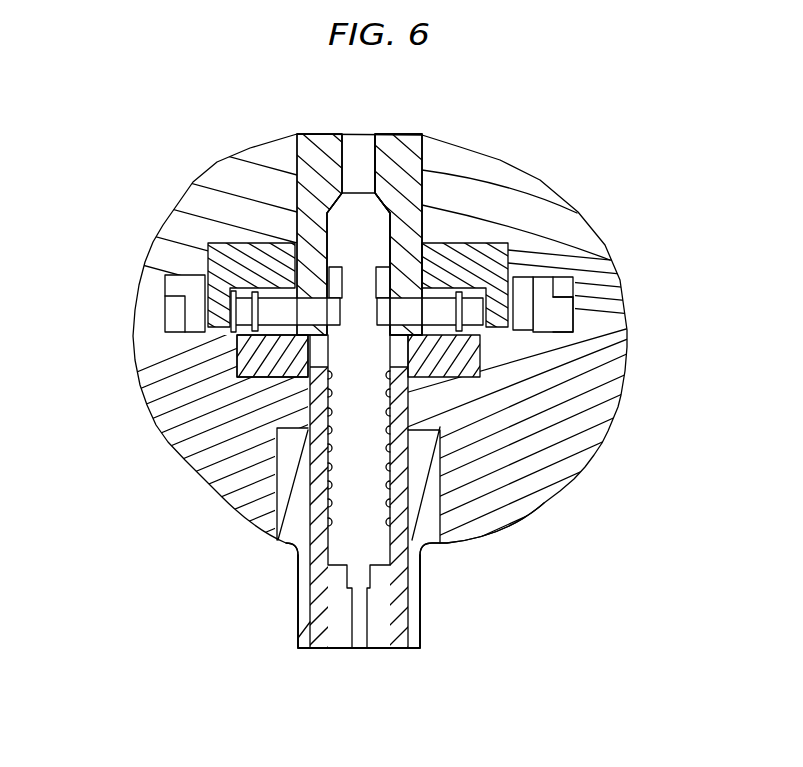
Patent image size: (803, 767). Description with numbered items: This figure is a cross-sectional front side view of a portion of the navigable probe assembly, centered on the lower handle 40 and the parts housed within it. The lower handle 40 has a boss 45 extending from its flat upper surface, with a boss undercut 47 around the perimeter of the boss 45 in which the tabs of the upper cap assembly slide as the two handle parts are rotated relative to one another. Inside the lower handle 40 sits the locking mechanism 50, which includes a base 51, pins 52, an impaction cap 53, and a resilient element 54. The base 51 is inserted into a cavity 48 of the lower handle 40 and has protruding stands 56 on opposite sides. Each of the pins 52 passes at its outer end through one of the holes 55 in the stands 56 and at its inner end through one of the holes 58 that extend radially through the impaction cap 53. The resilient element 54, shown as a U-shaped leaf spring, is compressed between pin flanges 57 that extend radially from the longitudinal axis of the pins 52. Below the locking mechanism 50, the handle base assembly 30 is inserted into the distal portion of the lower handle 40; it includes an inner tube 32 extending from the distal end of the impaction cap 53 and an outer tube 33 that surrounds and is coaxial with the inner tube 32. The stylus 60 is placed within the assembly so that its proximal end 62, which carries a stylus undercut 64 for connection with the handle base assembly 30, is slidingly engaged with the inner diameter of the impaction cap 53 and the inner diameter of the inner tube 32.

The handle base assembly 30 is at (336, 656).
The inner tube 32 is at (398, 600).
The outer tube 33 is at (413, 630).
The lower handle 40 is at (607, 446).
The boss 45 is at (520, 283).
The boss undercut 47 is at (555, 312).
The cavity 48 is at (277, 430).
The locking mechanism 50 is at (226, 355).
The base 51 is at (600, 398).
The pins 52 is at (308, 345).
The impaction cap 53 is at (397, 136).
The resilient element 54 is at (208, 262).
The holes 55 is at (183, 333).
The protruding stands 56 is at (165, 298).
The pin flanges 57 is at (240, 350).
The holes 58 is at (322, 290).
The stylus 60 is at (393, 198).
The proximal end 62 is at (362, 220).
The stylus undercut 64 is at (330, 278).